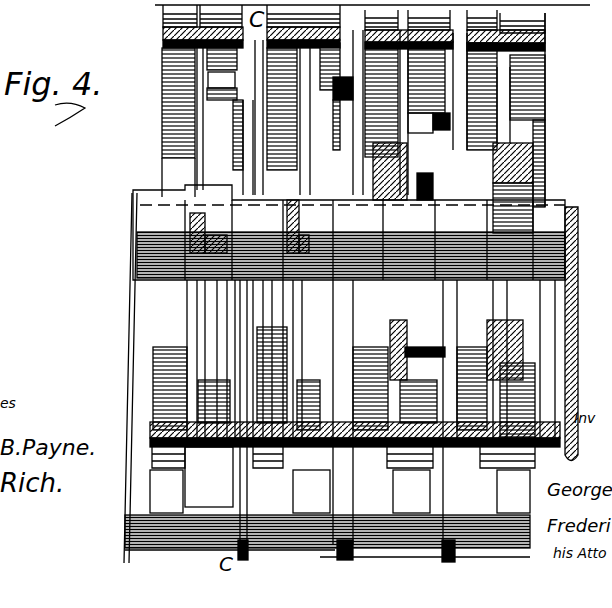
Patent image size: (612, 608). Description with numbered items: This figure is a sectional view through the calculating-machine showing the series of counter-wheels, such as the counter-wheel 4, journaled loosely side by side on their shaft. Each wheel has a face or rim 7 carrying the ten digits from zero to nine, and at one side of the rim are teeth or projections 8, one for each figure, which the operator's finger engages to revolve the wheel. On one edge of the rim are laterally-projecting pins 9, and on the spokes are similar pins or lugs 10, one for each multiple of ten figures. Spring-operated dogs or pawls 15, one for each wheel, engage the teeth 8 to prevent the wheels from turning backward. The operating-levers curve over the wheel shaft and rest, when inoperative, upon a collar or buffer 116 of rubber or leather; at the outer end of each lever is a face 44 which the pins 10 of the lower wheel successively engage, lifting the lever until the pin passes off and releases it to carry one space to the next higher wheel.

The teeth or projections 8 is at (172, 12).
The face or rim 7 is at (545, 33).
The laterally-projecting pins 9 is at (445, 46).
The counter-wheel 4 is at (248, 65).
The face 44 is at (259, 120).
The pins or lugs 10 is at (341, 92).
The collar or buffer 116 is at (349, 232).
The spring-operated dogs or pawls 15 is at (497, 495).